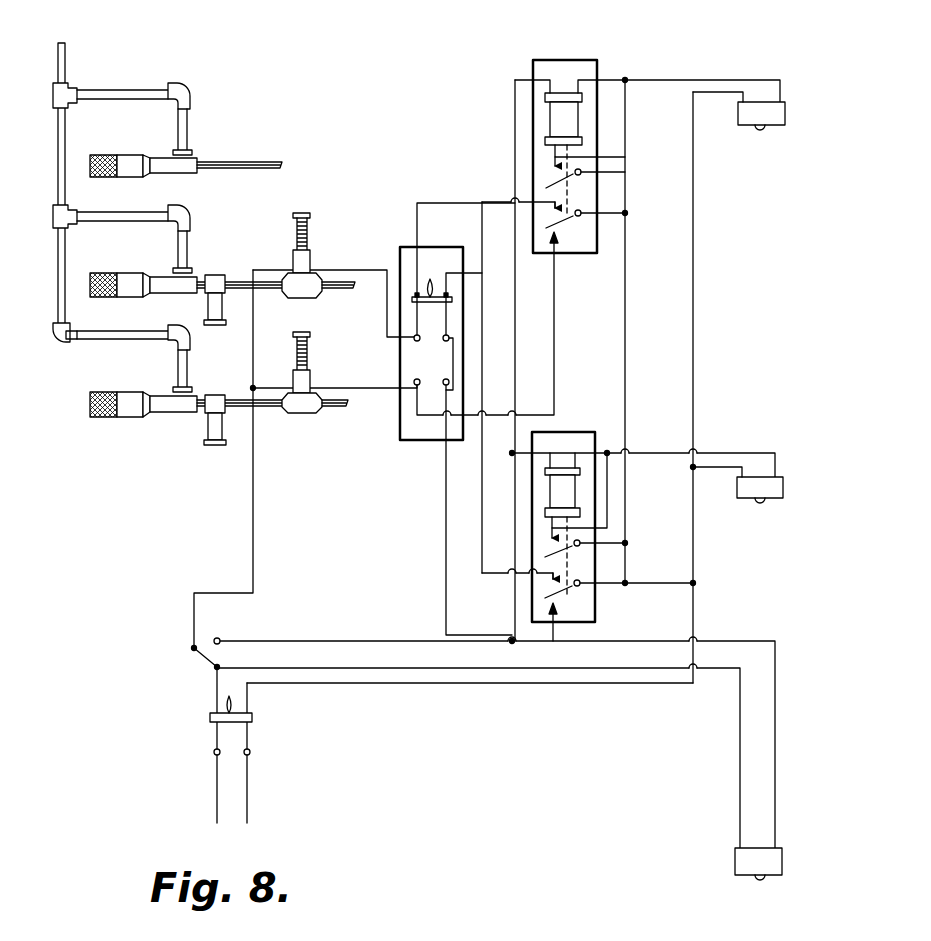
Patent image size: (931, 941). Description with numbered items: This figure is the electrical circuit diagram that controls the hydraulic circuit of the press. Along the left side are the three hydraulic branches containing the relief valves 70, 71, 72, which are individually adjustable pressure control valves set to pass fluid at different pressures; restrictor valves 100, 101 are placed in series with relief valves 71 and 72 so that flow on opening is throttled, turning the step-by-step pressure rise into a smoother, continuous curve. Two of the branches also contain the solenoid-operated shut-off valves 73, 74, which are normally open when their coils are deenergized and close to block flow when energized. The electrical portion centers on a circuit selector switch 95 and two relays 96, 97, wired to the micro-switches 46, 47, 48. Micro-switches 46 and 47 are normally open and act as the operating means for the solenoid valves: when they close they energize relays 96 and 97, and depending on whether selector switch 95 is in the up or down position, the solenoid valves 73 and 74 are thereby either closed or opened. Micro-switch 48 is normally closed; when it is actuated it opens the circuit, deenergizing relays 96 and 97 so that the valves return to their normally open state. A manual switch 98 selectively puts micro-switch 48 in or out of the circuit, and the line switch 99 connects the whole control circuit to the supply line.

The relief valve 70 is at (140, 143).
The relief valve 71 is at (127, 278).
The relief valve 72 is at (128, 398).
The solenoid-operated shut-off valve 73 is at (305, 280).
The solenoid-operated shut-off valve 74 is at (307, 413).
The restrictor valve 100 is at (218, 283).
The restrictor valve 101 is at (215, 405).
The circuit selector switch 95 is at (445, 255).
The relay 96 is at (600, 50).
The relay 97 is at (597, 612).
The micro-switch 46 is at (749, 122).
The micro-switch 47 is at (757, 483).
The micro-switch 48 is at (748, 865).
The manual switch 98 is at (193, 652).
The line switch 99 is at (247, 738).